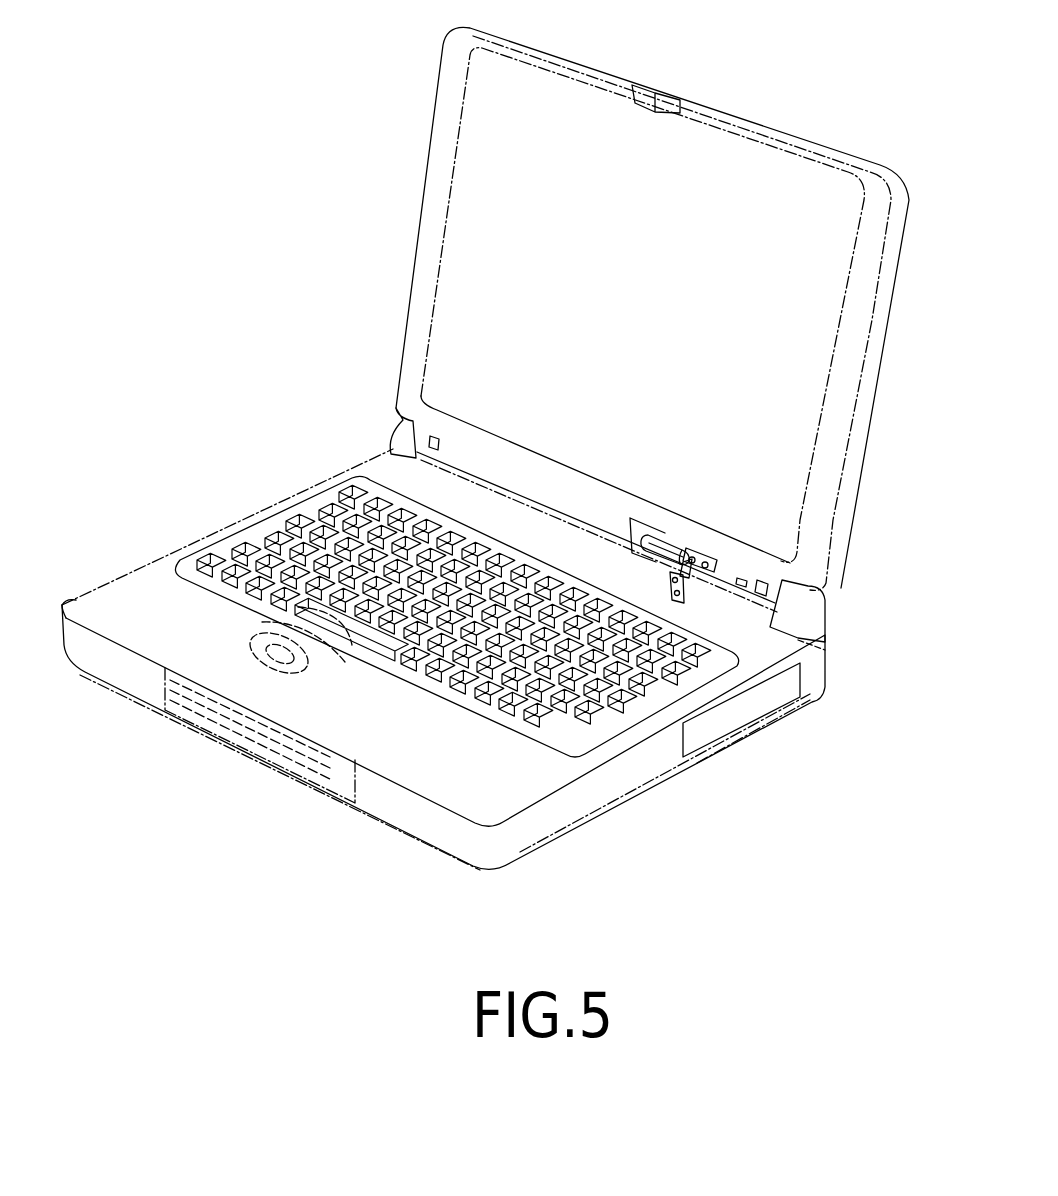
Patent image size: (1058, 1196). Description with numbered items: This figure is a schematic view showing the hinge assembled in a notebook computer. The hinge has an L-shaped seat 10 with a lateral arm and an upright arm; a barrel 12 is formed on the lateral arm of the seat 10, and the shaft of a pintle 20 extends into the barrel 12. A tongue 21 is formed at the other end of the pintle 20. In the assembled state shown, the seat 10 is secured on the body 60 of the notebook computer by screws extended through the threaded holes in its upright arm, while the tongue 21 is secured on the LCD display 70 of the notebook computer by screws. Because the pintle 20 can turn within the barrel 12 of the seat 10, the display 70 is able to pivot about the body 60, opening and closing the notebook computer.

The L-shaped seat 10 is at (684, 600).
The barrel 12 is at (658, 540).
The pintle 20 is at (705, 534).
The tongue 21 is at (710, 558).
The body 60 is at (815, 680).
The LCD display 70 is at (848, 512).